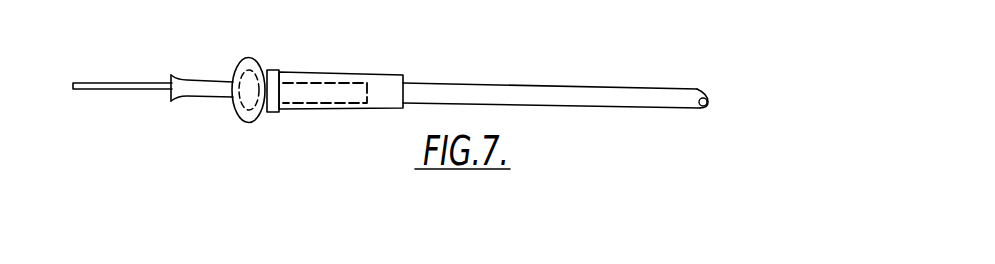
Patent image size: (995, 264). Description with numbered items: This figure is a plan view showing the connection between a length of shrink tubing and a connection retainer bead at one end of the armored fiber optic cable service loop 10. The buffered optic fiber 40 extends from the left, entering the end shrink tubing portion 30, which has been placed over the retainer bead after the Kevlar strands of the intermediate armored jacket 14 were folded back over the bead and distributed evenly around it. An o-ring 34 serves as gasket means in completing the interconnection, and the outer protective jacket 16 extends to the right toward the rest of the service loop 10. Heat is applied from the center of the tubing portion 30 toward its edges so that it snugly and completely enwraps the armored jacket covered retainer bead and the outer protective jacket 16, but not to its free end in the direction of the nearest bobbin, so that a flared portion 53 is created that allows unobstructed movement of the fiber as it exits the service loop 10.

The armored fiber optic cable service loop 10 is at (390, 92).
The intermediate armored jacket 14 is at (338, 96).
The outer protective jacket 16 is at (557, 108).
The end shrink tubing portion 30 is at (207, 100).
The o-ring 34 is at (272, 70).
The buffered optic fiber 40 is at (125, 91).
The flared portion 53 is at (172, 74).